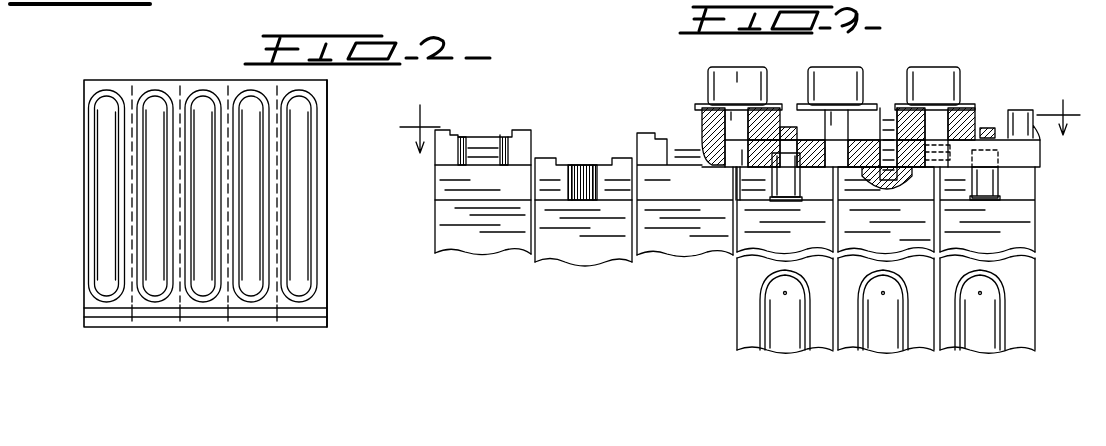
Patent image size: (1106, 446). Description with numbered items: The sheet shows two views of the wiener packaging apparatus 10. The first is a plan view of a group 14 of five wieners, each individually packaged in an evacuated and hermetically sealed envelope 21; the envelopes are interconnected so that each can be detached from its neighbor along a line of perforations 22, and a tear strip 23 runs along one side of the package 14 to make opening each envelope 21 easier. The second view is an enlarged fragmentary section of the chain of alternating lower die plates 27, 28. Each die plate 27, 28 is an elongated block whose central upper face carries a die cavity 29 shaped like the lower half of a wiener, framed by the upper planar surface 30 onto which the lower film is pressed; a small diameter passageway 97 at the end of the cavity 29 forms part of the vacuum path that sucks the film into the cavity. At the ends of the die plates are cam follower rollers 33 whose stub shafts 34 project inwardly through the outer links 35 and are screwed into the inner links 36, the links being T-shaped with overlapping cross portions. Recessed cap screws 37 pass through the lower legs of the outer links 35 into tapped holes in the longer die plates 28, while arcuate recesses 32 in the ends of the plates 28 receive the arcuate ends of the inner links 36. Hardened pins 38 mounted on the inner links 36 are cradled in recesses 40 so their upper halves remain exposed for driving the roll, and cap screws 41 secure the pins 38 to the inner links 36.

In FIG. 9, the apparatus 10 is at (740, 120).
In FIG. 2, the group of packaged wieners 14 is at (78, 130).
In FIG. 2, the envelope 21 is at (330, 202).
In FIG. 2, the line of perforations 22 is at (132, 90).
In FIG. 2, the tear strip 23 is at (284, 318).
In FIG. 9, the lower die plate 27 is at (606, 265).
In FIG. 9, the lower die plate 28 is at (478, 260).
In FIG. 9, the die cavity 29 is at (788, 352).
In FIG. 9, the upper planar surface 30 is at (742, 325).
In FIG. 9, the arcuate recess 32 is at (510, 142).
In FIG. 9, the cam follower roller 33 is at (710, 82).
In FIG. 9, the stub shaft 34 is at (945, 108).
In FIG. 9, the outer link 35 is at (703, 118).
In FIG. 9, the inner link 36 is at (1042, 153).
In FIG. 9, the cap screw 37 is at (887, 106).
In FIG. 9, the hardened pin 38 is at (800, 180).
In FIG. 9, the recess 40 is at (585, 178).
In FIG. 9, the cap screw 41 is at (789, 126).
In FIG. 9, the small diameter passageway 97 is at (783, 293).